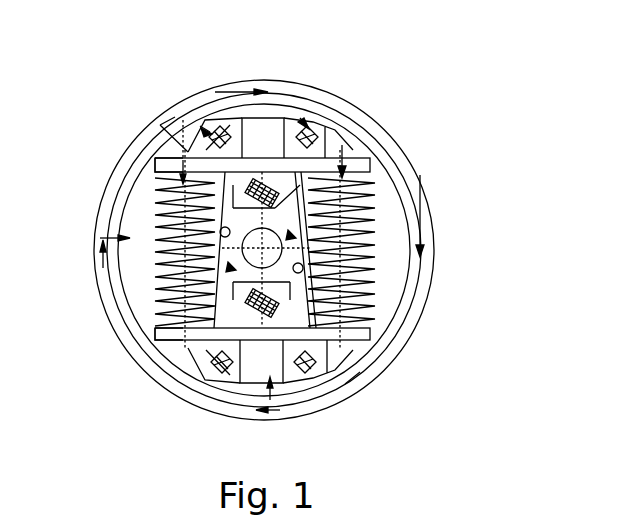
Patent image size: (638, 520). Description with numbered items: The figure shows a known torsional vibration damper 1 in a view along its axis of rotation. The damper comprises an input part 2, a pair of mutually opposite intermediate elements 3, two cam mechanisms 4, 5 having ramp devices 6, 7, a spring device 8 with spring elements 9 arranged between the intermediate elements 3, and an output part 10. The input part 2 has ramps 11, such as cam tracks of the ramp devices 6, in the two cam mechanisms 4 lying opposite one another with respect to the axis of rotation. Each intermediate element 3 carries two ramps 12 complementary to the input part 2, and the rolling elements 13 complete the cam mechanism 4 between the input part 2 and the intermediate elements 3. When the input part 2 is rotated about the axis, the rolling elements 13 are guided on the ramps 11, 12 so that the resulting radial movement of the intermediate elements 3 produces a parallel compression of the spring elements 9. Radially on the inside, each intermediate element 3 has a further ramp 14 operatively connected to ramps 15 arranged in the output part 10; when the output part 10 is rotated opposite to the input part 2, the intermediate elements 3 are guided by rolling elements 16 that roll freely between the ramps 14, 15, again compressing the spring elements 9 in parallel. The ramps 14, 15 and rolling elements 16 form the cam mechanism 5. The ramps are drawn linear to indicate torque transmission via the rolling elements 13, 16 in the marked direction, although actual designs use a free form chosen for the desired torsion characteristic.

The torsional vibration damper 1 is at (398, 56).
The input part 2 is at (387, 108).
The intermediate elements 3 is at (402, 150).
The cam mechanism 4 is at (226, 118).
The cam mechanism 5 is at (362, 196).
The ramp device 6 is at (182, 158).
The ramp device 7 is at (362, 372).
The spring device 8 is at (100, 238).
The spring elements 9 is at (110, 210).
The output part 10 is at (113, 272).
The ramps 11 is at (202, 126).
The ramps 12 is at (240, 116).
The rolling elements 13 is at (205, 122).
The ramps 14 is at (118, 417).
The ramps 15 is at (242, 248).
The rolling elements 16 is at (272, 120).